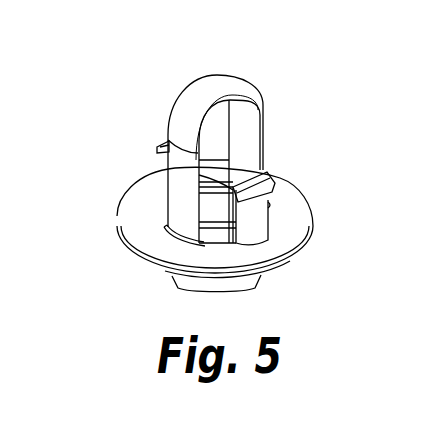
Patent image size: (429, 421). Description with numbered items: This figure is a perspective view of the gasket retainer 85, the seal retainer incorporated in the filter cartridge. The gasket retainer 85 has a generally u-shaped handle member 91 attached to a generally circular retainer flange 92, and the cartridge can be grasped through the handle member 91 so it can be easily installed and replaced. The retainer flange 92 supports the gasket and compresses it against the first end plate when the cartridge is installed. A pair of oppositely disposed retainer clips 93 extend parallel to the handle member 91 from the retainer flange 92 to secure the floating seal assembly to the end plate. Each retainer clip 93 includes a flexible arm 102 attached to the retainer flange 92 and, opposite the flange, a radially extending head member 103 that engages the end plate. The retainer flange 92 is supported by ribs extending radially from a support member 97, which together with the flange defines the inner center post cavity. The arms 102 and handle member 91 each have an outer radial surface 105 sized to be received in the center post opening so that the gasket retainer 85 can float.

The gasket retainer 85 is at (265, 131).
The handle member 91 is at (223, 78).
The retainer clips 93 is at (160, 143).
The retainer flange 92 is at (299, 217).
The arm 102 is at (252, 217).
The head member 103 is at (135, 208).
The support member 97 is at (190, 287).
The outer radial surface 105 is at (243, 225).